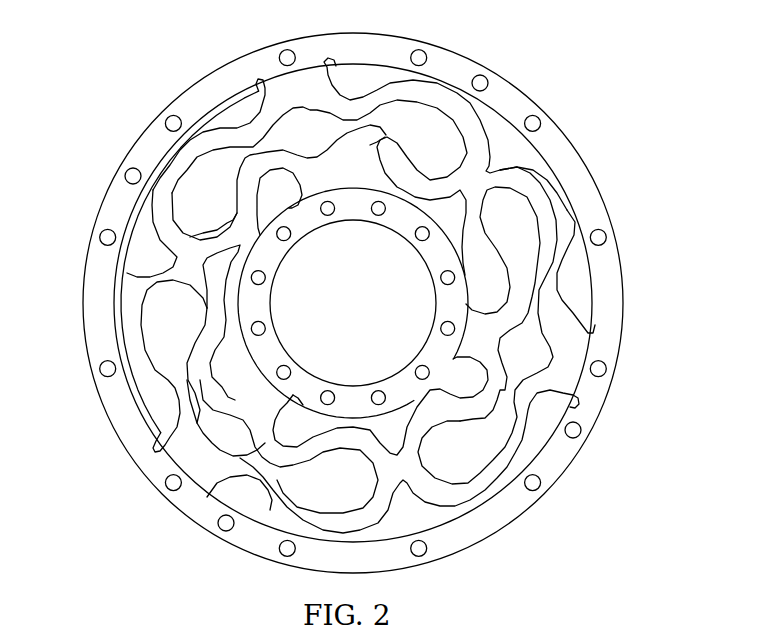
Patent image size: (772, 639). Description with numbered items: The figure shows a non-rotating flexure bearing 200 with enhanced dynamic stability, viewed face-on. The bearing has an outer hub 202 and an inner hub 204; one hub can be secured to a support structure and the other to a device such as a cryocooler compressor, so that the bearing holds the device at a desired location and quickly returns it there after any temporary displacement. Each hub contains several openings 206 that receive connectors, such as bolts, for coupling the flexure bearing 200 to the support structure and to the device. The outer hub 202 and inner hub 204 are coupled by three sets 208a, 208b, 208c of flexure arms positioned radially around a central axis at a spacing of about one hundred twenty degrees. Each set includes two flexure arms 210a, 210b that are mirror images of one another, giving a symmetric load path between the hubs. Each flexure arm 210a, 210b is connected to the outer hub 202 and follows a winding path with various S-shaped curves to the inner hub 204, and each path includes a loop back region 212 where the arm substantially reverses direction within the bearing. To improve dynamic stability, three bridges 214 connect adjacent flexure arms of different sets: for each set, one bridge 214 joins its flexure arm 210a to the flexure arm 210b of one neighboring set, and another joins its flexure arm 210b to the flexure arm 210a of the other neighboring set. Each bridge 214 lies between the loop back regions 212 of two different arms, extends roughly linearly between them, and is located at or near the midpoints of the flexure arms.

The flexure bearing 200 is at (155, 70).
The outer hub 202 is at (383, 303).
The inner hub 204 is at (437, 303).
The opening 206 is at (608, 238).
The set of flexure arms 208a is at (273, 72).
The set of flexure arms 208b is at (577, 378).
The set of flexure arms 208c is at (150, 476).
The flexure arm 210a is at (127, 312).
The flexure arm 210b is at (270, 493).
The loop back region 212 is at (148, 274).
The bridge 214 is at (158, 248).